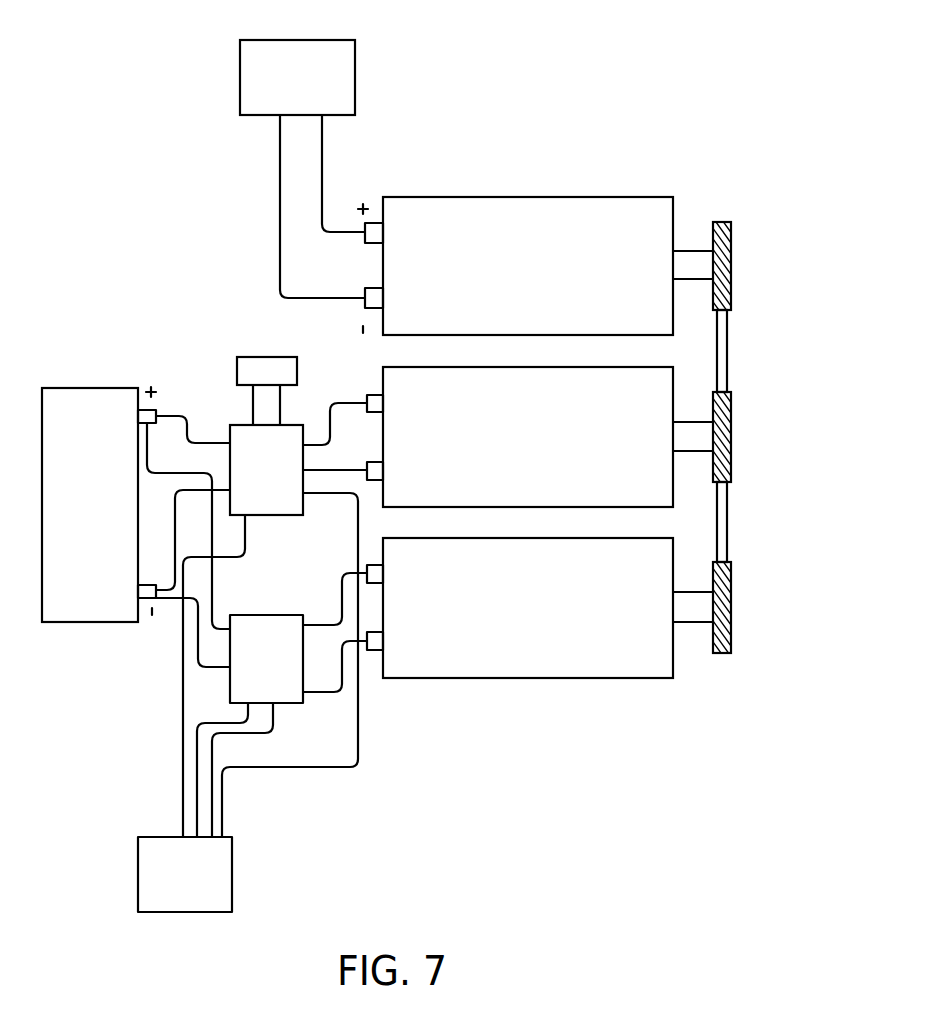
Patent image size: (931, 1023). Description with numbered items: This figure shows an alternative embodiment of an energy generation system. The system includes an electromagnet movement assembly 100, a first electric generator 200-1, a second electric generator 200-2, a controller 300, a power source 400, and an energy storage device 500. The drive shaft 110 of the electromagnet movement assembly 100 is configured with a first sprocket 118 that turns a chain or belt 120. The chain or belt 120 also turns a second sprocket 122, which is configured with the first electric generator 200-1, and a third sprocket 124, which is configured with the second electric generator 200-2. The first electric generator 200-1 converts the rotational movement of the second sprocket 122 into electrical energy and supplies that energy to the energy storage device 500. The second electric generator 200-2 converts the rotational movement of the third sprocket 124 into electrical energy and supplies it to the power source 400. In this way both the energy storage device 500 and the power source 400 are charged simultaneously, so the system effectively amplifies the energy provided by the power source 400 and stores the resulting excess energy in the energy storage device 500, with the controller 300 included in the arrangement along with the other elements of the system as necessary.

The energy storage device 500 is at (355, 75).
The first electric generator 200-1 is at (527, 197).
The second electric generator 200-2 is at (673, 660).
The electromagnet movement assembly 100 is at (673, 470).
The drive shaft 110 is at (758, 419).
The first sprocket 118 is at (731, 445).
The chain or belt 120 is at (727, 342).
The second sprocket 122 is at (731, 260).
The third sprocket 124 is at (731, 605).
The controller 300 is at (235, 425).
The power source 400 is at (90, 388).